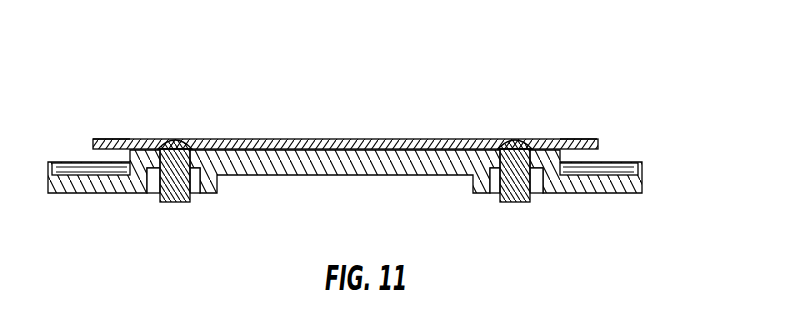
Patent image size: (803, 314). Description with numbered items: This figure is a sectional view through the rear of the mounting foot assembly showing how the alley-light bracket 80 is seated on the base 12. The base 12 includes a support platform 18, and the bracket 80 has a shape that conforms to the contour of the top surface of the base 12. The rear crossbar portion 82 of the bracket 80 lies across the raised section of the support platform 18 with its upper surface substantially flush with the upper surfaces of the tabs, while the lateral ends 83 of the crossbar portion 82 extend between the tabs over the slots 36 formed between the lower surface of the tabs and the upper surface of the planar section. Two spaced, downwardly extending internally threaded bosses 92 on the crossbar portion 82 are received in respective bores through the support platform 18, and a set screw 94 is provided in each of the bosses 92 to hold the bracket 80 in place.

The base 12 is at (623, 192).
The support platform 18 is at (342, 176).
The slots 36 is at (106, 160).
The bracket 80 is at (388, 139).
The crossbar portion 82 is at (317, 138).
The lateral ends 83 is at (120, 138).
The internally threaded bosses 92 is at (165, 146).
The set screw 94 is at (175, 199).